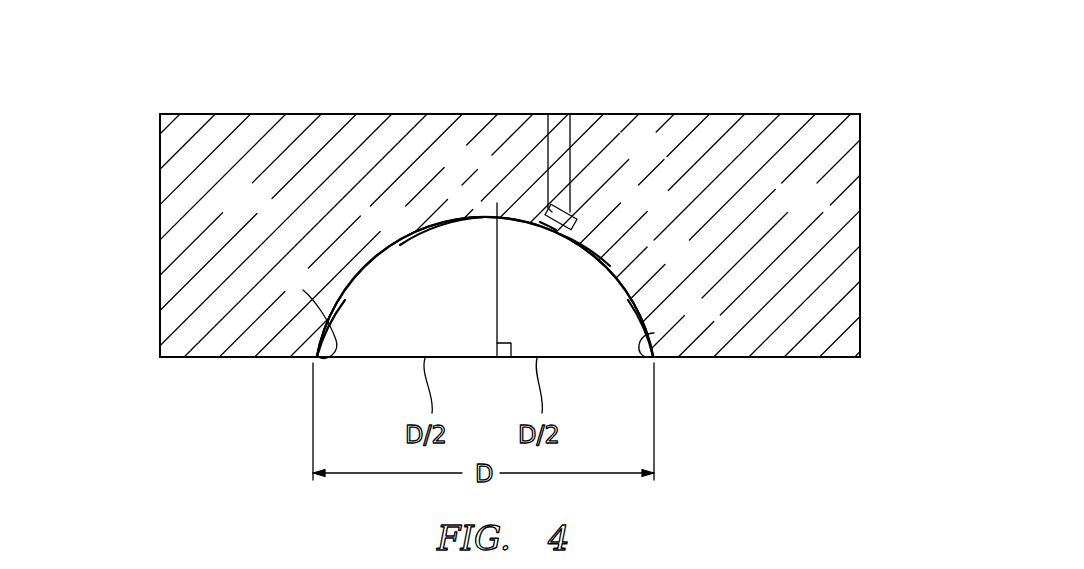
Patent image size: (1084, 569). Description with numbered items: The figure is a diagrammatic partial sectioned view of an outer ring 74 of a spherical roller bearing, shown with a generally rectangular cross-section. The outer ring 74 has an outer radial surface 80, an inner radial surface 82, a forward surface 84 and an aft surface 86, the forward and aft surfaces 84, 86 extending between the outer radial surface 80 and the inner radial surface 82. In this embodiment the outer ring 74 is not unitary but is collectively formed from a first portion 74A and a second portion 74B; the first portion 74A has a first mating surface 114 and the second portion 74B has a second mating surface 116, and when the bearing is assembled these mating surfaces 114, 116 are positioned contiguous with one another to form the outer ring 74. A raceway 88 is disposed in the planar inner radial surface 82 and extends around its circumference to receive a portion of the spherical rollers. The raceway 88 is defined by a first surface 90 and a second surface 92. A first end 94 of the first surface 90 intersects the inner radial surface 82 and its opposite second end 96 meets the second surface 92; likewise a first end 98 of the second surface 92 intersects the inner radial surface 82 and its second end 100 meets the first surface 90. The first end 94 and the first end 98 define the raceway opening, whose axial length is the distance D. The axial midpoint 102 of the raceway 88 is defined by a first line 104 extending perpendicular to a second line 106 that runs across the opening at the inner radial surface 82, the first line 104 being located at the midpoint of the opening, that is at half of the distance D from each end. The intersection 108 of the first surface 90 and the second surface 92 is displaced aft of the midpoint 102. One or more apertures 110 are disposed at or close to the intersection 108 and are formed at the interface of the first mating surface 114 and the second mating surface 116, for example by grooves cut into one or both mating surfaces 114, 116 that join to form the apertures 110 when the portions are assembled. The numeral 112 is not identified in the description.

The outer ring 74 is at (499, 231).
The first portion 74A is at (270, 212).
The second portion 74B is at (826, 210).
The outer radial surface 80 is at (662, 113).
The inner radial surface 82 is at (218, 358).
The forward surface 84 is at (158, 320).
The aft surface 86 is at (862, 290).
The raceway 88 is at (461, 341).
The first surface 90 is at (345, 297).
The second surface 92 is at (630, 308).
The first end of the first surface 94 is at (315, 312).
The second end of the first surface 96 is at (548, 216).
The first end of the second surface 98 is at (643, 330).
The second end of the second surface 100 is at (572, 212).
The axial midpoint 102 is at (497, 219).
The first line 104 is at (498, 318).
The second line 106 is at (388, 357).
The intersection 108 is at (548, 223).
The aperture 110 is at (557, 126).
The transition surface 112 is at (584, 224).
The first mating surface 114 is at (546, 132).
The second mating surface 116 is at (550, 147).